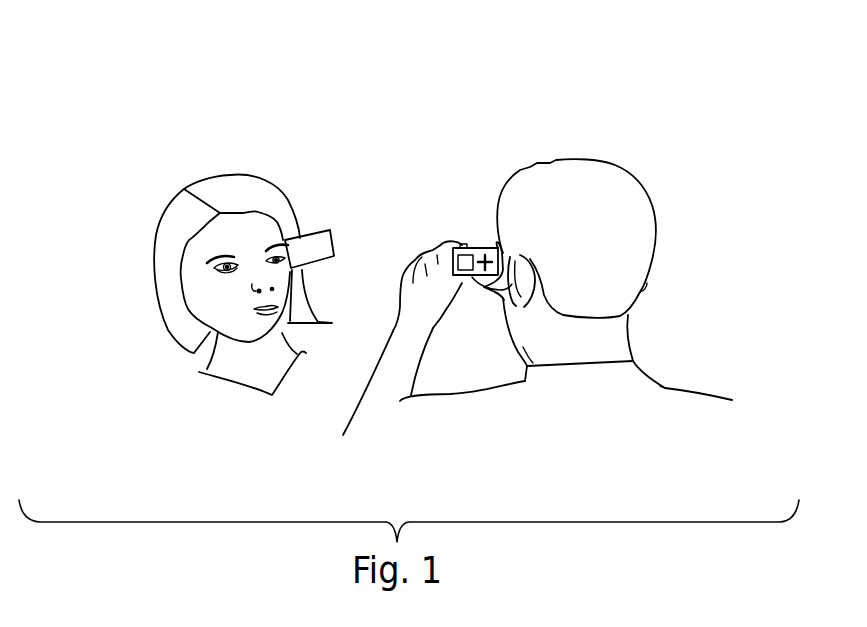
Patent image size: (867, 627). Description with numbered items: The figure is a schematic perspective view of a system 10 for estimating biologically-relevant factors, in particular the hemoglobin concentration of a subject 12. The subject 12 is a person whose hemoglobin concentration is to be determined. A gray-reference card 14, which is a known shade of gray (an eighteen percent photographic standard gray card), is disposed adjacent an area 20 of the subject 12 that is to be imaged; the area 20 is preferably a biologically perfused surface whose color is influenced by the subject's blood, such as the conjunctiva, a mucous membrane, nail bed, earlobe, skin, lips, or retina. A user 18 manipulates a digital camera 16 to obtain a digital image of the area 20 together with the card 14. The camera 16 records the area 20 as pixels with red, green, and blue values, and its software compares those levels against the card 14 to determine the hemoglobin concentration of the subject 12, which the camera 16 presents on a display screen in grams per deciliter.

The system 10 is at (556, 90).
The subject 12 is at (163, 312).
The gray-reference card 14 is at (322, 230).
The digital camera 16 is at (463, 246).
The user 18 is at (657, 230).
The area 20 is at (280, 268).